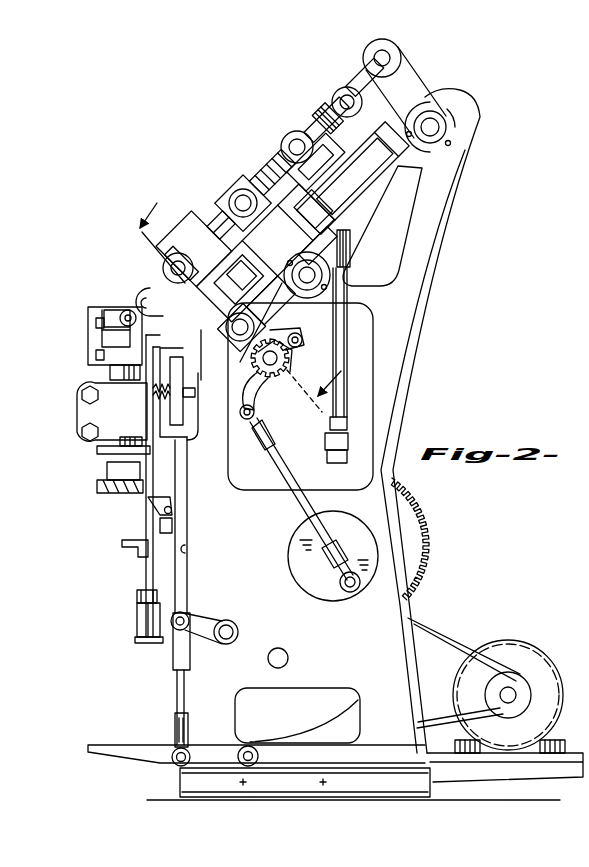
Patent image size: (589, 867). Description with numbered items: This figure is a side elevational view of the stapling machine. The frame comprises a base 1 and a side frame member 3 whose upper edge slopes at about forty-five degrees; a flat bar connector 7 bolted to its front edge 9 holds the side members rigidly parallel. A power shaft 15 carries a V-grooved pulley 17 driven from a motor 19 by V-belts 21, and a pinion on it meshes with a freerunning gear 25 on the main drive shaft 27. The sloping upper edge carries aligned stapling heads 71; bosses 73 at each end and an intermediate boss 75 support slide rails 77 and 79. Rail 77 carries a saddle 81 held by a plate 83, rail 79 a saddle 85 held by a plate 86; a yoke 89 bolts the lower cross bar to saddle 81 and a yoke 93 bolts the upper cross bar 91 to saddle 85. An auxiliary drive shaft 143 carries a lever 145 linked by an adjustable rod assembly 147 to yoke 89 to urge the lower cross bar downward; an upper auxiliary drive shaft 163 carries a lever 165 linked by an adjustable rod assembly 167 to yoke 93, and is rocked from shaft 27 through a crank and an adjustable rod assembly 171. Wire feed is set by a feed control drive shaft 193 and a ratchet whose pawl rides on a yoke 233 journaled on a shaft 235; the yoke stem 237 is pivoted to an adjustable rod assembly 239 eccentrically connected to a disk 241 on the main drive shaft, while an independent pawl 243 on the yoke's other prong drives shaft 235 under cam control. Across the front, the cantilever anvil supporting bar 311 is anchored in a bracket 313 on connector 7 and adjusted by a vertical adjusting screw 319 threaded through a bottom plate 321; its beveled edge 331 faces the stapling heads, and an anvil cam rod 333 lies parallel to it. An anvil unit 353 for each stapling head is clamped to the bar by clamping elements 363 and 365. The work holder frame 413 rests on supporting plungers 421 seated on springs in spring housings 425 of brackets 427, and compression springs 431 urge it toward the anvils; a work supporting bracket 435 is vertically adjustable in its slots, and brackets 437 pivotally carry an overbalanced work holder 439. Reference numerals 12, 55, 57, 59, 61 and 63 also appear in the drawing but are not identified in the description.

The base 1 is at (193, 782).
The side frame member 3 is at (236, 531).
The flat bar connector 7 is at (173, 410).
The front edge 9 is at (188, 549).
The cutting head assembly 12 is at (223, 312).
The power shaft 15 is at (268, 659).
The pulley 17 is at (313, 727).
The motor 19 is at (530, 661).
The V-belts 21 is at (437, 634).
The freerunning gear 25 is at (416, 528).
The main drive shaft 27 is at (322, 557).
The carriage plate 55 is at (110, 745).
The roller 57 is at (259, 756).
The rod 59 is at (177, 692).
The arm 61 is at (198, 620).
The eye 63 is at (234, 633).
The stapling heads 71 is at (187, 235).
The boss 73 is at (420, 150).
The intermediate boss 75 is at (268, 267).
The slide rail 77 is at (279, 251).
The slide rail 79 is at (323, 216).
The saddle 81 is at (225, 238).
The plate 83 is at (256, 299).
The saddle 85 is at (355, 168).
The plate 86 is at (350, 190).
The yoke 89 is at (163, 268).
The upper cross bar 91 is at (318, 165).
The yoke 93 is at (305, 150).
The auxiliary drive shaft 143 is at (312, 277).
The lever 145 is at (290, 243).
The adjustable rod assembly 147 is at (240, 216).
The auxiliary drive shaft 163 is at (436, 127).
The lever 165 is at (407, 73).
The adjustable rod assembly 167 is at (342, 92).
The adjustable rod assembly 171 is at (337, 353).
The feed control drive shaft 193 is at (237, 318).
The yoke 233 is at (265, 384).
The shaft 235 is at (284, 367).
The stem 237 is at (243, 400).
The adjustable rod assembly 239 is at (276, 462).
The disk 241 is at (372, 505).
The pawl 243 is at (290, 333).
The anvil supporting bar 311 is at (110, 343).
The bracket 313 is at (102, 412).
The vertical adjusting screw 319 is at (107, 474).
The bottom plate 321 is at (97, 450).
The beveled edge 331 is at (127, 331).
The anvil cam rod 333 is at (123, 312).
The anvil unit 353 is at (110, 313).
The clamping element 363 is at (95, 321).
The clamping element 365 is at (95, 358).
The frame 413 is at (146, 569).
The supporting plunger 421 is at (137, 601).
The spring housing 425 is at (137, 621).
The bracket 427 is at (160, 641).
The compression spring 431 is at (160, 400).
The work supporting bracket 435 is at (146, 554).
The bracket 437 is at (170, 524).
The work holder 439 is at (170, 502).